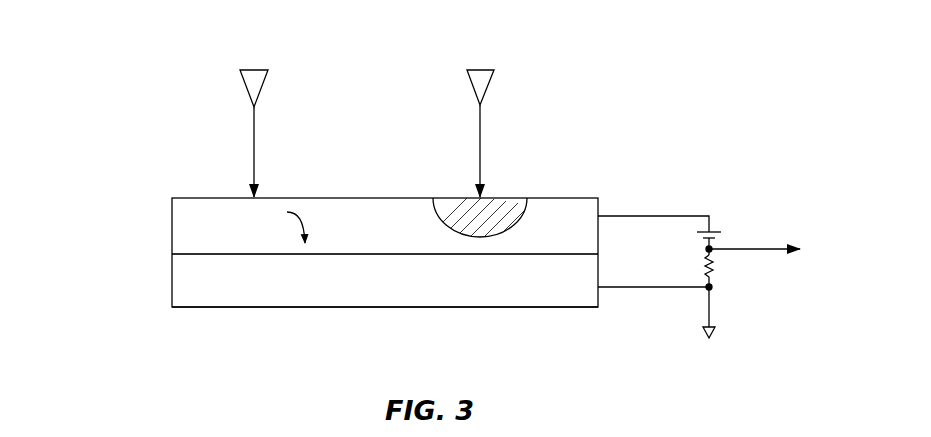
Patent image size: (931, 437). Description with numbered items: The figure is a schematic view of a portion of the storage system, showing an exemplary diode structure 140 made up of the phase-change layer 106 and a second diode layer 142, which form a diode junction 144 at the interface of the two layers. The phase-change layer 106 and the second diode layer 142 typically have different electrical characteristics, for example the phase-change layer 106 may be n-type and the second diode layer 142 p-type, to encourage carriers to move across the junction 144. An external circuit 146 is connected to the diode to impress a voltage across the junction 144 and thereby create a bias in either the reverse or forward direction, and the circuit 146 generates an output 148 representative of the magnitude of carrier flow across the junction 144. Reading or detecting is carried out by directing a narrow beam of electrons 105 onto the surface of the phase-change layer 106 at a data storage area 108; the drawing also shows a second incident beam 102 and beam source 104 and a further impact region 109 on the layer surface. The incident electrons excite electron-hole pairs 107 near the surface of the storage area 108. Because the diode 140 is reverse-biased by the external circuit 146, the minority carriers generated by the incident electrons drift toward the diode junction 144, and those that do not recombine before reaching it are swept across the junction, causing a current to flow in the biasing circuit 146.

The first radiation beam (electron beam source) 102 is at (255, 80).
The second radiation beam (positron beam source) 104 is at (481, 80).
The narrow beam of electrons 105 is at (483, 122).
The phase-change layer 106 is at (172, 222).
The electron-hole pairs 107 is at (468, 208).
The data storage area 108 is at (495, 183).
The impact point of beam 109 is at (280, 187).
The diode structure 140 is at (128, 241).
The second diode layer 142 is at (185, 309).
The diode junction 144 is at (212, 256).
The external circuit 146 is at (745, 228).
The output 148 is at (779, 251).